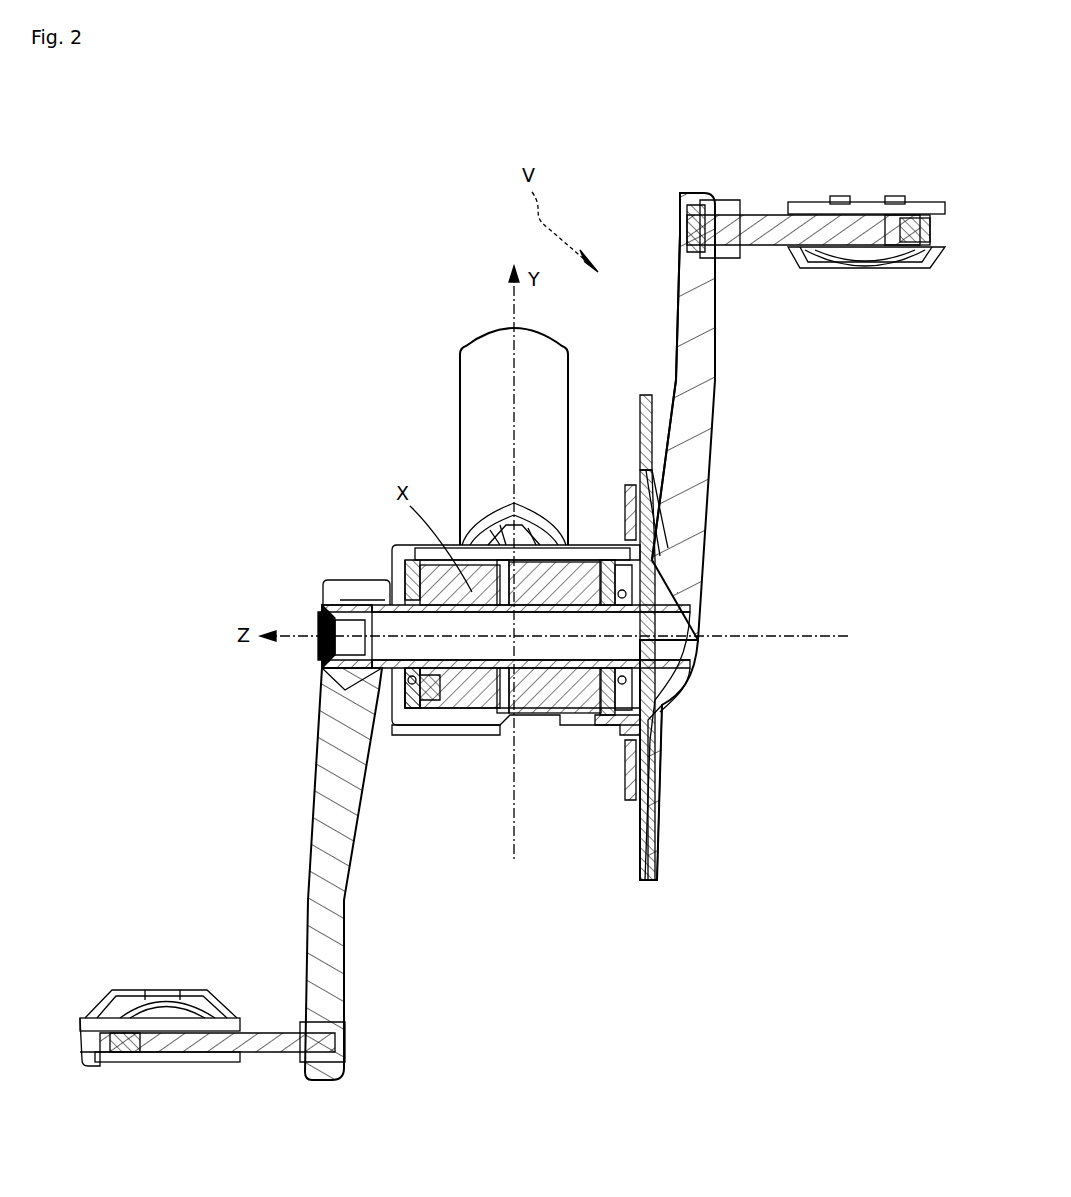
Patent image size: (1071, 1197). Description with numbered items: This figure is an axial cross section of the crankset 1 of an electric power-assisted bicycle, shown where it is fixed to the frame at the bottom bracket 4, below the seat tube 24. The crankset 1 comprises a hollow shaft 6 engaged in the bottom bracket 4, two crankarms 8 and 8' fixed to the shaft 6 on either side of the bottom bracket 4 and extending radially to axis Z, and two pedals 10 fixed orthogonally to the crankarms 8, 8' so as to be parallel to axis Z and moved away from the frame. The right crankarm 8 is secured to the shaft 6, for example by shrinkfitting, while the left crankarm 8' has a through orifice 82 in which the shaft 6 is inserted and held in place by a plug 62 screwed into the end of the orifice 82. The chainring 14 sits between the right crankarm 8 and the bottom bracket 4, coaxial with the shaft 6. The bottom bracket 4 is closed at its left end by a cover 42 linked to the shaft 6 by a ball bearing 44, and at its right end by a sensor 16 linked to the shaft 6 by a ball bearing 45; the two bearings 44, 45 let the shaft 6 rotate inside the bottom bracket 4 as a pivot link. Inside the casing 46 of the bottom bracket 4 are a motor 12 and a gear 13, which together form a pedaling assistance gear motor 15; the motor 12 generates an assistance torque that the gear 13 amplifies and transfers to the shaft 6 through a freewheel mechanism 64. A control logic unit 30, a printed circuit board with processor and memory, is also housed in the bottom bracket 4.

The crankset 1 is at (270, 598).
The bottom bracket 4 is at (480, 504).
The hollow shaft 6 is at (612, 628).
The right crankarm 8 is at (713, 760).
The left crankarm 8' is at (361, 874).
The pedal 10 is at (840, 265).
The motor 12 is at (474, 722).
The gear 13 is at (540, 702).
The chainring 14 is at (700, 437).
The pedaling assistance gear motor 15 is at (546, 790).
The sensor 16 is at (652, 568).
The seat tube 24 is at (486, 384).
The control logic unit 30 is at (598, 738).
The cover 42 is at (384, 572).
The ball bearing 44 is at (355, 598).
The ball bearing 45 is at (662, 680).
The casing 46 is at (462, 732).
The plug 62 is at (320, 650).
The freewheel mechanism 64 is at (571, 720).
The through orifice 82 is at (318, 632).